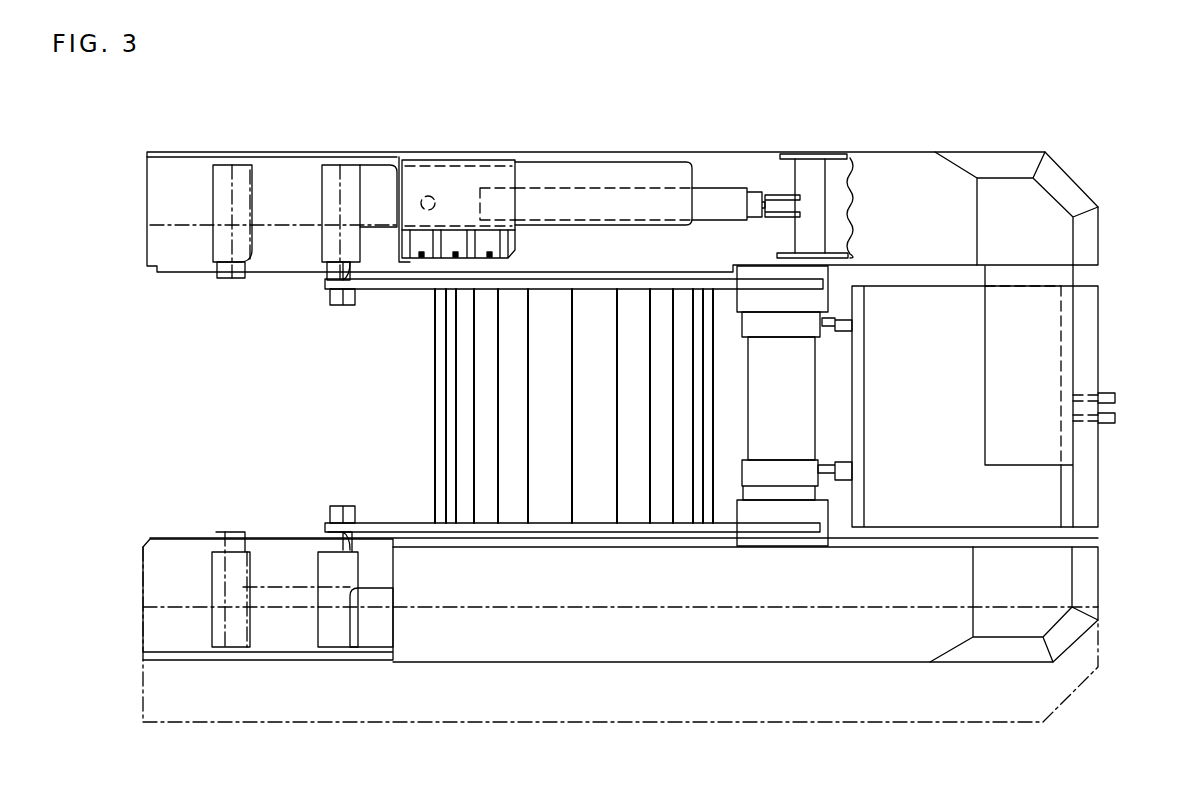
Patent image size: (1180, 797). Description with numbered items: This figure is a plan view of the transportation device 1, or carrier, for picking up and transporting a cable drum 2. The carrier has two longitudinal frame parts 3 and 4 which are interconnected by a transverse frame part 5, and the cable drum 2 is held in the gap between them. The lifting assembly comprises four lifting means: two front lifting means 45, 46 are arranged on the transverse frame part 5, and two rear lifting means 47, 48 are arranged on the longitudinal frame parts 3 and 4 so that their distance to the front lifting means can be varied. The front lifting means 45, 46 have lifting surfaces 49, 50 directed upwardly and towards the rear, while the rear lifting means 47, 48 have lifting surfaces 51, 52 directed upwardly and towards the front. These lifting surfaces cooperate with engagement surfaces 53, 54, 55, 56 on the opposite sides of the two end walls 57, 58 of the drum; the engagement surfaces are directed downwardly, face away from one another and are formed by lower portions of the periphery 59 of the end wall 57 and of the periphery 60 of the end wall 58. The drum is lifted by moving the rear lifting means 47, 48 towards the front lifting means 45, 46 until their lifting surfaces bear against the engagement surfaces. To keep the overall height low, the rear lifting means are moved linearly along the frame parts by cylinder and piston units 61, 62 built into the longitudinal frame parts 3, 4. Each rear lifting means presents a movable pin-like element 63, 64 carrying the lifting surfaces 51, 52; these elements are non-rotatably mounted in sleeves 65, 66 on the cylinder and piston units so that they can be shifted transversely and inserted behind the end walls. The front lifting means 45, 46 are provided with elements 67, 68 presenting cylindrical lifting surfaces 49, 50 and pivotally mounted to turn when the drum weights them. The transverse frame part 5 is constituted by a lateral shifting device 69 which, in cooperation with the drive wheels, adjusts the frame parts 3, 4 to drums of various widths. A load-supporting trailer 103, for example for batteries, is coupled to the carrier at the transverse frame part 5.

The transportation device 1 is at (622, 164).
The cable drum 2 is at (460, 392).
The longitudinal frame part 3 is at (610, 632).
The longitudinal frame part 4 is at (891, 150).
The transverse frame part 5 is at (796, 388).
The front lifting means 45 is at (779, 513).
The front lifting means 46 is at (774, 288).
The rear lifting means 47 is at (292, 520).
The rear lifting means 48 is at (300, 298).
The lifting surface 49 is at (757, 510).
The lifting surface 50 is at (752, 300).
The lifting surface 51 is at (355, 512).
The lifting surface 52 is at (352, 298).
The engagement surface 53 is at (796, 530).
The engagement surface 54 is at (373, 540).
The engagement surface 55 is at (806, 236).
The engagement surface 56 is at (372, 270).
The end wall 57 is at (483, 535).
The end wall 58 is at (539, 268).
The periphery 59 is at (538, 521).
The periphery 60 is at (588, 286).
The cylinder and piston unit 61 is at (373, 626).
The cylinder and piston unit 62 is at (710, 197).
The movable element 63 is at (336, 507).
The movable element 64 is at (333, 302).
The sleeve 65 is at (212, 622).
The sleeve 66 is at (212, 192).
The element 67 is at (816, 512).
The element 68 is at (828, 300).
The lateral shifting device 69 is at (796, 432).
The load-supporting trailer 103 is at (1084, 342).